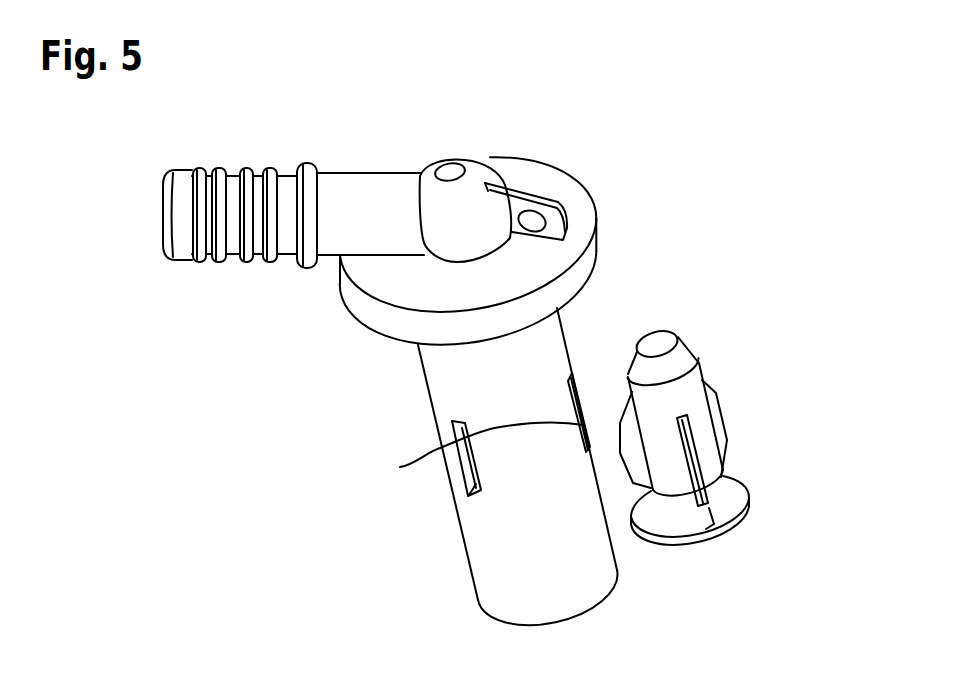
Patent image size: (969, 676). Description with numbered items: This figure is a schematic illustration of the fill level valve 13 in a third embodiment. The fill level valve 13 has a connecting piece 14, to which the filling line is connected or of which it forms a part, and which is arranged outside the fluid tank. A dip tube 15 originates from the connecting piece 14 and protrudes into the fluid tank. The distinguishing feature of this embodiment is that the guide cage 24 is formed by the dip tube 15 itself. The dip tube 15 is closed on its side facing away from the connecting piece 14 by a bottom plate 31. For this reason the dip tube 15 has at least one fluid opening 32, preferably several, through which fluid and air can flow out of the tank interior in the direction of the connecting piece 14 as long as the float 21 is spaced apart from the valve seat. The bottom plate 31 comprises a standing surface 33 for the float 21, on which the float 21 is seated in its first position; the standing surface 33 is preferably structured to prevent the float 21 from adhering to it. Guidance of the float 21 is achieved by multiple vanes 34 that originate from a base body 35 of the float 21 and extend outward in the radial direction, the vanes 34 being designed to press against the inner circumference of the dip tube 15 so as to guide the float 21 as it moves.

The fill level valve 13 is at (707, 193).
The connecting piece 14 is at (236, 181).
The dip tube 15 is at (488, 533).
The float 21 is at (698, 330).
The guide cage 24 is at (500, 570).
The bottom plate 31 is at (683, 543).
The fluid opening 32 is at (470, 474).
The standing surface 33 is at (714, 524).
The vanes 34 is at (633, 450).
The base body 35 is at (682, 398).